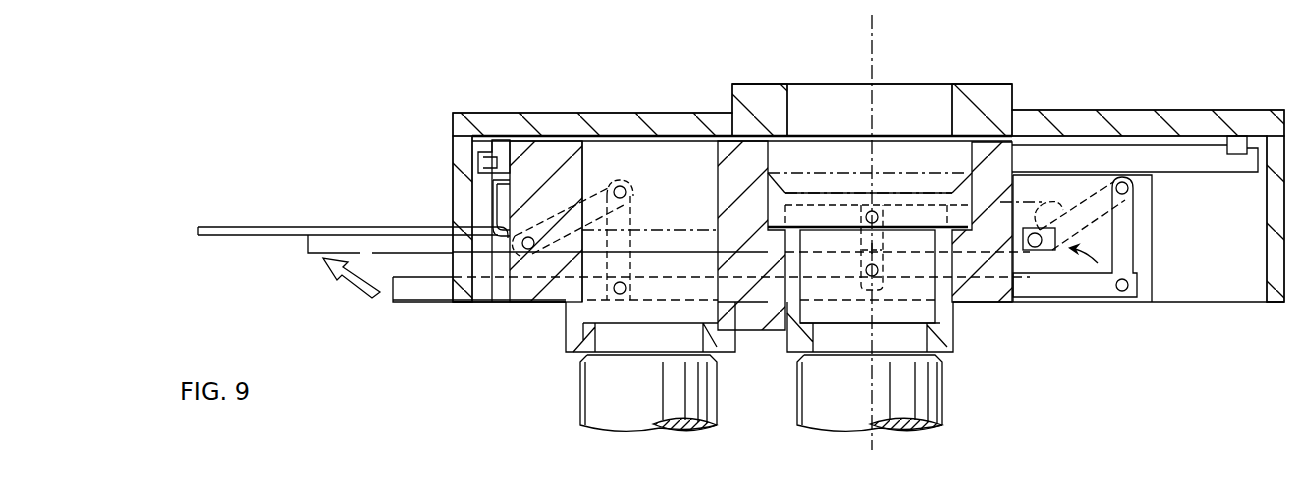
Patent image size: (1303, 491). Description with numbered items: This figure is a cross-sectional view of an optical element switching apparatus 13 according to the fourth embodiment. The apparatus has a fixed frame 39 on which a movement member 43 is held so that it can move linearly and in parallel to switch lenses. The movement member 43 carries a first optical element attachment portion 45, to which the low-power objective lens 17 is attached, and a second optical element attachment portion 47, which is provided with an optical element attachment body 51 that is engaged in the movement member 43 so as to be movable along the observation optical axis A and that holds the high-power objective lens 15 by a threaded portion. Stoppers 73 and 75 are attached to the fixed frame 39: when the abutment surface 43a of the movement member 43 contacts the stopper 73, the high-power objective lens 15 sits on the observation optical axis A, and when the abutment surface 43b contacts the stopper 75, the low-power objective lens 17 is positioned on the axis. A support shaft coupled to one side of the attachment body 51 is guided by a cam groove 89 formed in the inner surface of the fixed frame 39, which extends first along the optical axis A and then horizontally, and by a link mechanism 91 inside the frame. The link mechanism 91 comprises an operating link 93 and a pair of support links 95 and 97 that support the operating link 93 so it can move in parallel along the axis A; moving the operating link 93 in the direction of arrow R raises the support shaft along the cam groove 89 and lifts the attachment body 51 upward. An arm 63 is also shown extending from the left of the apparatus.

The optical element switching apparatus 13 is at (982, 60).
The high-power objective lens 15 is at (942, 405).
The low-power objective lens 17 is at (580, 402).
The fixed frame 39 is at (650, 113).
The movement member 43 is at (744, 224).
The abutment surface 43a is at (498, 244).
The abutment surface 43b is at (1018, 165).
The first optical element attachment portion 45 is at (566, 330).
The second optical element attachment portion 47 is at (962, 321).
The optical element attachment body 51 is at (787, 338).
The arm 63 is at (287, 222).
The stopper 73 is at (499, 146).
The stopper 75 is at (1237, 146).
The cam groove 89 is at (1043, 198).
The link mechanism 91 is at (675, 308).
The operating link 93 is at (306, 245).
The support link 95 is at (633, 210).
The support link 97 is at (1136, 230).
The observation optical axis A is at (880, 32).
The direction of movement of operating link R is at (351, 286).